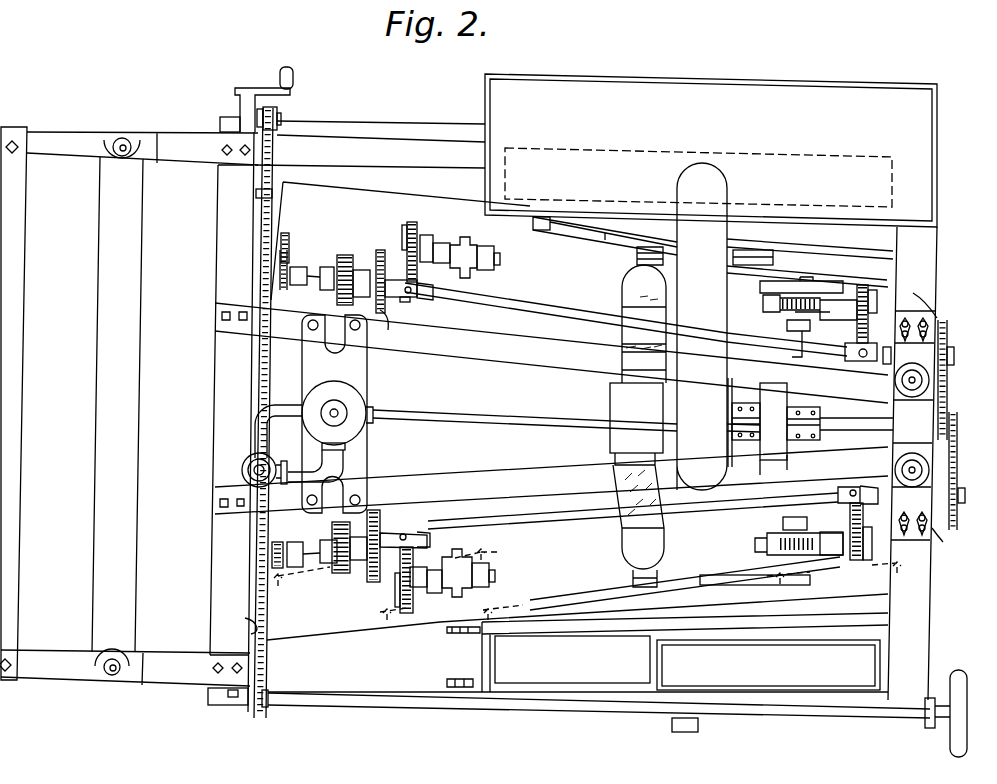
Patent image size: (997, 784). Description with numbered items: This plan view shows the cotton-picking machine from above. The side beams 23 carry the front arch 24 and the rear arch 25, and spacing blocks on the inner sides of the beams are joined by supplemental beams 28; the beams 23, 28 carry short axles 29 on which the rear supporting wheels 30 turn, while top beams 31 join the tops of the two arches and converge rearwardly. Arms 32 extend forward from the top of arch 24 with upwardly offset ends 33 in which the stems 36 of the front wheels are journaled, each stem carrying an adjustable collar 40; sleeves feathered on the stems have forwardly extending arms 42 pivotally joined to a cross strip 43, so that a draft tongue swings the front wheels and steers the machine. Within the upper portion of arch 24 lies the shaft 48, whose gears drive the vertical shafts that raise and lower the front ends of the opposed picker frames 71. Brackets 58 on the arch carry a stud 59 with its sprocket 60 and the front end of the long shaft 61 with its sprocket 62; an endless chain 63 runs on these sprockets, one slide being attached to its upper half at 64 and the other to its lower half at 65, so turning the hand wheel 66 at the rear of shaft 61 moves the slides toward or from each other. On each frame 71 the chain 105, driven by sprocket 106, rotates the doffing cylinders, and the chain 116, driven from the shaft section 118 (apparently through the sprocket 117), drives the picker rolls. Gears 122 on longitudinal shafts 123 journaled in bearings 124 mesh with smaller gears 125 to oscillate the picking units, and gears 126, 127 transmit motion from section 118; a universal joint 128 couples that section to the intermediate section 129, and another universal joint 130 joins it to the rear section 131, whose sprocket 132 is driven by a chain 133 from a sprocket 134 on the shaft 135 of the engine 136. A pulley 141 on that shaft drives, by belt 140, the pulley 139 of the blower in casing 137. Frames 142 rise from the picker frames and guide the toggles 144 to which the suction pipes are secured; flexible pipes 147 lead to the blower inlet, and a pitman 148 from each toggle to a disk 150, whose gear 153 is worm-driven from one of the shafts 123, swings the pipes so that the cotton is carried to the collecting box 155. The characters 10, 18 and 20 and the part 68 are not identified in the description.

The section line 10 is at (396, 575).
The section line 18 is at (632, 591).
The section line 20 is at (638, 599).
The side beams 23 is at (415, 125).
The front arch 24 is at (220, 431).
The rear arch 25 is at (926, 611).
The supplemental beams 28 is at (607, 632).
The short axles 29 is at (700, 726).
The rear supporting wheels 30 is at (768, 665).
The top beams 31 is at (473, 350).
The arms 32 is at (173, 657).
The offset ends 33 is at (132, 676).
The stems 36 is at (129, 140).
The collar 40 is at (296, 88).
The forwardly extending arms 42 is at (68, 672).
The cross strip 43 is at (17, 262).
The shaft 48 is at (249, 96).
The brackets 58 is at (231, 127).
The stud 59 is at (280, 134).
The sprocket 60 is at (282, 113).
The shaft 61 is at (498, 710).
The sprocket 62 is at (263, 716).
The endless chain 63 is at (262, 378).
The connection to upper half of chain 64 is at (256, 195).
The connection to lower half of chain 65 is at (252, 619).
The hand wheel 66 is at (957, 676).
The roller 68 is at (907, 458).
The picker frames 71 is at (362, 192).
The endless chain 105 is at (387, 312).
The sprocket 106 is at (380, 260).
The endless chain 116 is at (288, 263).
The bushing 117 is at (280, 273).
The shaft section 118 is at (318, 273).
The gears 122 is at (417, 222).
The longitudinal shafts 123 is at (458, 255).
The bearings 124 is at (494, 257).
The smaller gears 125 is at (412, 300).
The gear 126 is at (413, 295).
The gear 127 is at (353, 254).
The universal joint 128 is at (406, 535).
The intermediate shaft section 129 is at (777, 342).
The universal joint 130 is at (857, 361).
The rear shaft section 131 is at (884, 366).
The sprocket 132 is at (934, 422).
The chains 133 is at (947, 457).
The sprockets 134 is at (948, 420).
The engine shaft 135 is at (505, 420).
The engine 136 is at (356, 402).
The blower casing 137 is at (702, 326).
The pulley 139 is at (797, 406).
The belt 140 is at (765, 400).
The pulley 141 is at (795, 456).
The frames 142 is at (575, 234).
The toggle 144 is at (634, 578).
The flexible pipes 147 is at (667, 530).
The pitman 148 is at (720, 567).
The disk 150 is at (790, 282).
The gear 153 is at (816, 305).
The collecting box 155 is at (905, 83).